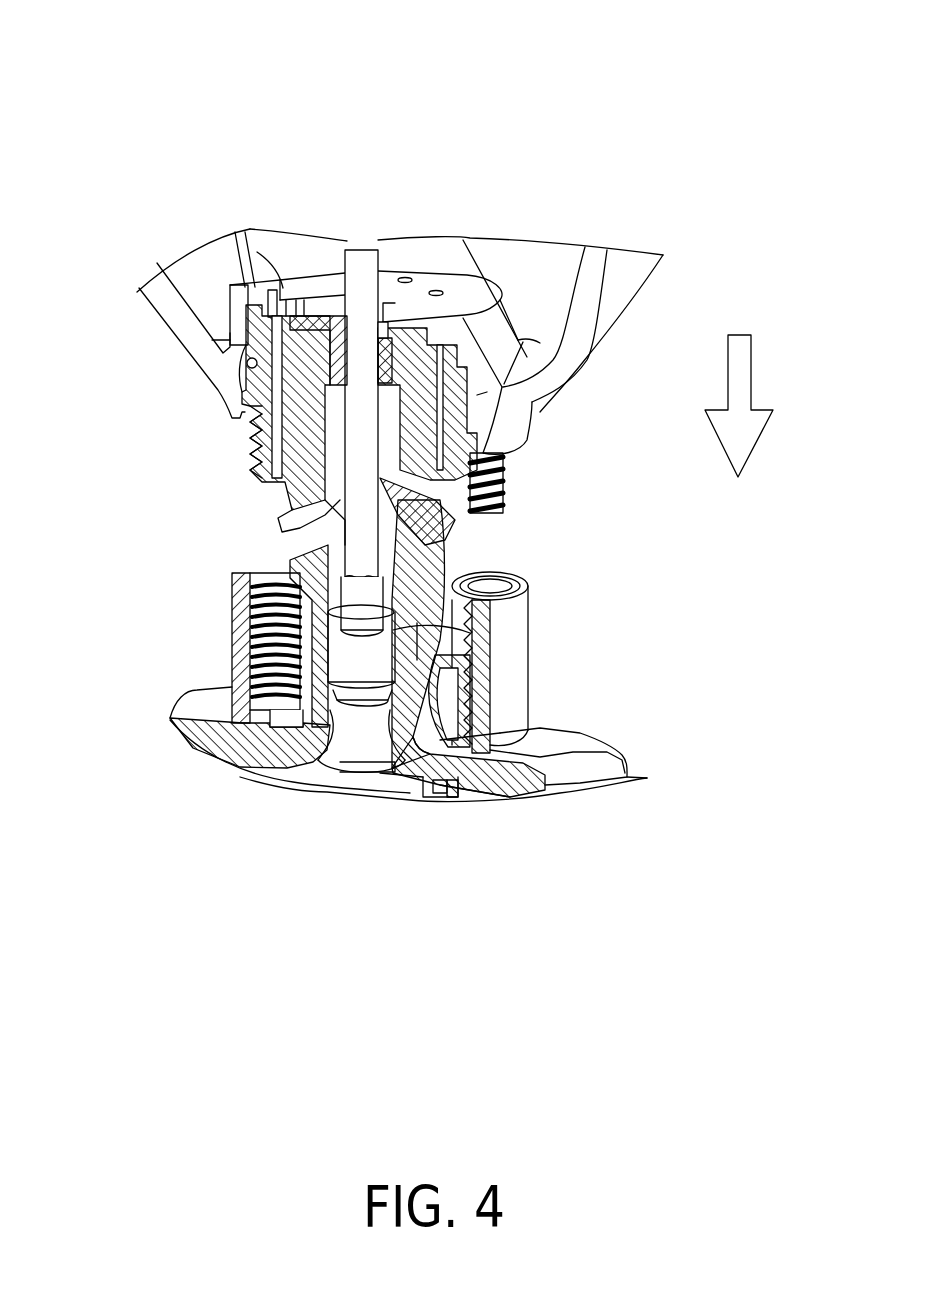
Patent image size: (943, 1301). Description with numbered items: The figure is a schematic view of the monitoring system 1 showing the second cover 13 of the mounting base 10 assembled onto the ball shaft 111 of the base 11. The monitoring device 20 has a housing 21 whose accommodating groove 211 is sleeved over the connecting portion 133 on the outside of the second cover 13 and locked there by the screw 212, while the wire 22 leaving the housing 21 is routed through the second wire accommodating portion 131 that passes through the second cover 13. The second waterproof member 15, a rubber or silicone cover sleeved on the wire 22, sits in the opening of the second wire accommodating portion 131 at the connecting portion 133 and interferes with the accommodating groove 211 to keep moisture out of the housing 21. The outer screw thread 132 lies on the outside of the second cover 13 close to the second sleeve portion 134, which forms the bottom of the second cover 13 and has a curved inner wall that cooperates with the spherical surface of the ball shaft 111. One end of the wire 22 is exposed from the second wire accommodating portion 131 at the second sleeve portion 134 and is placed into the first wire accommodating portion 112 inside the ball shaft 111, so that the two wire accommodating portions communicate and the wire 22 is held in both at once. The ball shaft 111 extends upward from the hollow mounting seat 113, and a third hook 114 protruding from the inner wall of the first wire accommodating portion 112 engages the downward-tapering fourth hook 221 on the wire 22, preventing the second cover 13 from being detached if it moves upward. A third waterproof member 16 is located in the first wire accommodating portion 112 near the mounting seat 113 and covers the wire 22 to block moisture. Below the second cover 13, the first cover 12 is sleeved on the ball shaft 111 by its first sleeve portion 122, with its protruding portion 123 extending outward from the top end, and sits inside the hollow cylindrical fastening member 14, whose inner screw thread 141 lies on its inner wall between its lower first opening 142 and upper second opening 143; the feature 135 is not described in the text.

The monitoring system 1 is at (148, 115).
The mounting base 10 is at (161, 516).
The base 11 is at (205, 692).
The ball shaft 111 is at (455, 577).
The first wire accommodating portion 112 is at (398, 560).
The mounting seat 113 is at (602, 755).
The third hook 114 is at (417, 775).
The first cover 12 is at (453, 707).
The first sleeve portion 122 is at (477, 765).
The protruding portion 123 is at (470, 660).
The second cover 13 is at (502, 490).
The second wire accommodating portion 131 is at (343, 455).
The outer screw thread 132 is at (503, 470).
The connecting portion 133 is at (245, 385).
The second sleeve portion 134 is at (315, 505).
The positioning lug 135 is at (487, 392).
The fastening member 14 is at (520, 643).
The inner screw thread 141 is at (245, 592).
The first opening 142 is at (280, 720).
The second opening 143 is at (270, 572).
The second waterproof member 15 is at (318, 318).
The third waterproof member 16 is at (331, 760).
The monitoring device 20 is at (147, 259).
The housing 21 is at (635, 278).
The accommodating groove 211 is at (258, 322).
The screw 212 is at (435, 291).
The wire 22 is at (362, 258).
The fourth hook 221 is at (382, 718).